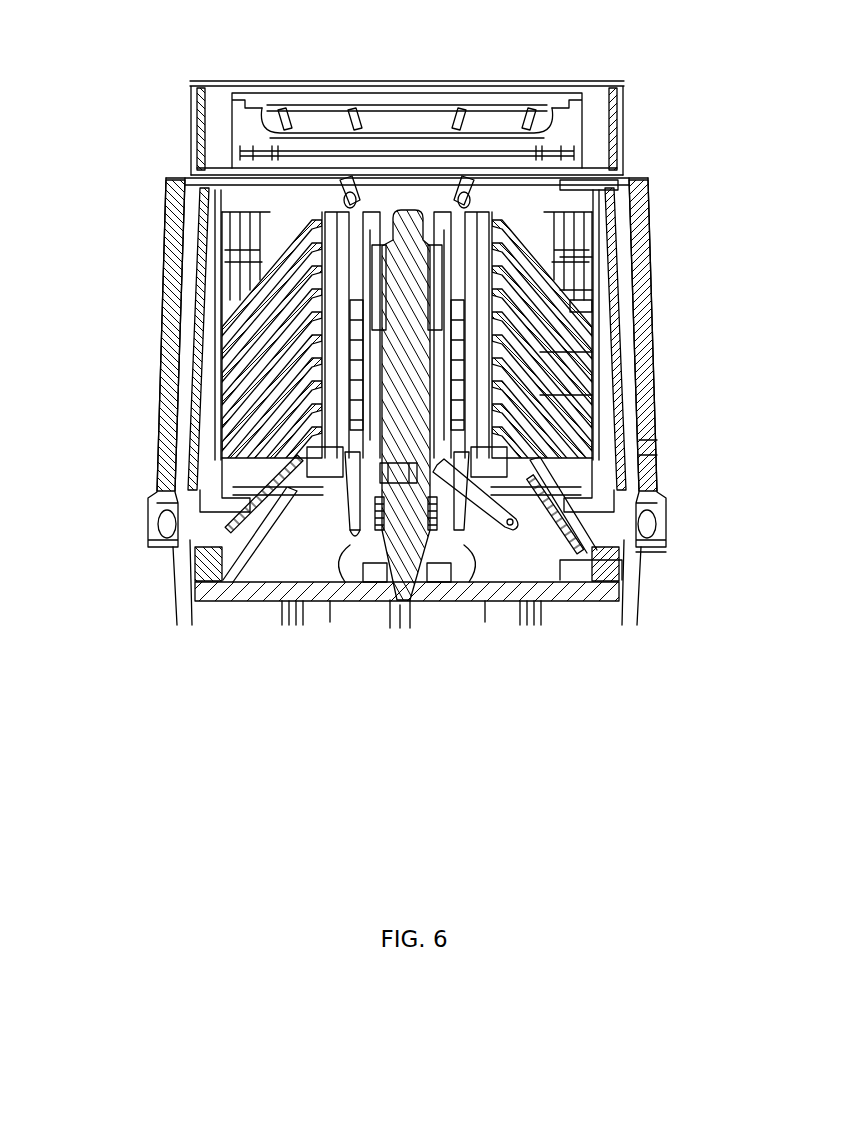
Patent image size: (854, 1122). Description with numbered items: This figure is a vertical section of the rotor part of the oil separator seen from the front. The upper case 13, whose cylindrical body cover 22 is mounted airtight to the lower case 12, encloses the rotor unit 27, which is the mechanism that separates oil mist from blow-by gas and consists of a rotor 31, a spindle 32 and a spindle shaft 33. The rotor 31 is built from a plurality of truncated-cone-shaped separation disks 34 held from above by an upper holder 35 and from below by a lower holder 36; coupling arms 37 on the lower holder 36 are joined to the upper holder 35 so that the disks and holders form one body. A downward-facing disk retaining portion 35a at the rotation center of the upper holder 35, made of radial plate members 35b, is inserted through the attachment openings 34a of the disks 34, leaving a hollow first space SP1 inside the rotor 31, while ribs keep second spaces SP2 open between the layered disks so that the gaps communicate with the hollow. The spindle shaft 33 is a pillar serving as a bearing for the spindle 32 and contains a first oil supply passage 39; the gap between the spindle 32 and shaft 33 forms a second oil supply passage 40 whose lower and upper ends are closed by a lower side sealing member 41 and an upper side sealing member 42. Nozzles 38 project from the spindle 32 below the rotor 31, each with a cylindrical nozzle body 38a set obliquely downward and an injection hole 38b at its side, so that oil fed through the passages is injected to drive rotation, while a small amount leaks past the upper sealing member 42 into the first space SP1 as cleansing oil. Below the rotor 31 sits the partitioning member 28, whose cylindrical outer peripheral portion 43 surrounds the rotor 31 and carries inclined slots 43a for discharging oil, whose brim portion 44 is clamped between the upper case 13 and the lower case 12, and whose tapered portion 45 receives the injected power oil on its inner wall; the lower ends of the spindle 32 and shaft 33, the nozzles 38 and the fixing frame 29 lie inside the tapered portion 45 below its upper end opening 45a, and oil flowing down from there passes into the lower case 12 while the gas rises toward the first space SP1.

The lower case 12 is at (173, 583).
The upper case 13 is at (186, 177).
The body cover 22 is at (383, 314).
The rotor unit 27 is at (70, 185).
The partitioning member 28 is at (714, 445).
The fixing frame 29 is at (232, 603).
The rotor 31 is at (108, 243).
The spindle 32 is at (287, 500).
The spindle shaft 33 is at (325, 137).
The separation disks 34 is at (232, 348).
The attachment opening 34a is at (588, 290).
The upper holder 35 is at (318, 247).
The disk retaining portion 35a is at (450, 30).
The plate members 35b is at (454, 185).
The lower holder 36 is at (322, 468).
The coupling arms 37 is at (250, 383).
The nozzles 38 is at (340, 555).
The nozzle bodies 38a is at (490, 545).
The injection holes 38b is at (530, 560).
The first oil supply passage 39 is at (402, 603).
The second oil supply passage 40 is at (358, 535).
The lower side sealing member 41 is at (455, 550).
The upper side sealing member 42 is at (598, 186).
The outer peripheral portion 43 is at (630, 455).
The slot 43a is at (622, 396).
The brim portion 44 is at (660, 516).
The tapered portion 45 is at (603, 585).
The upper end opening 45a is at (540, 402).
The first space SP1 is at (583, 300).
The second spaces SP2 is at (556, 395).